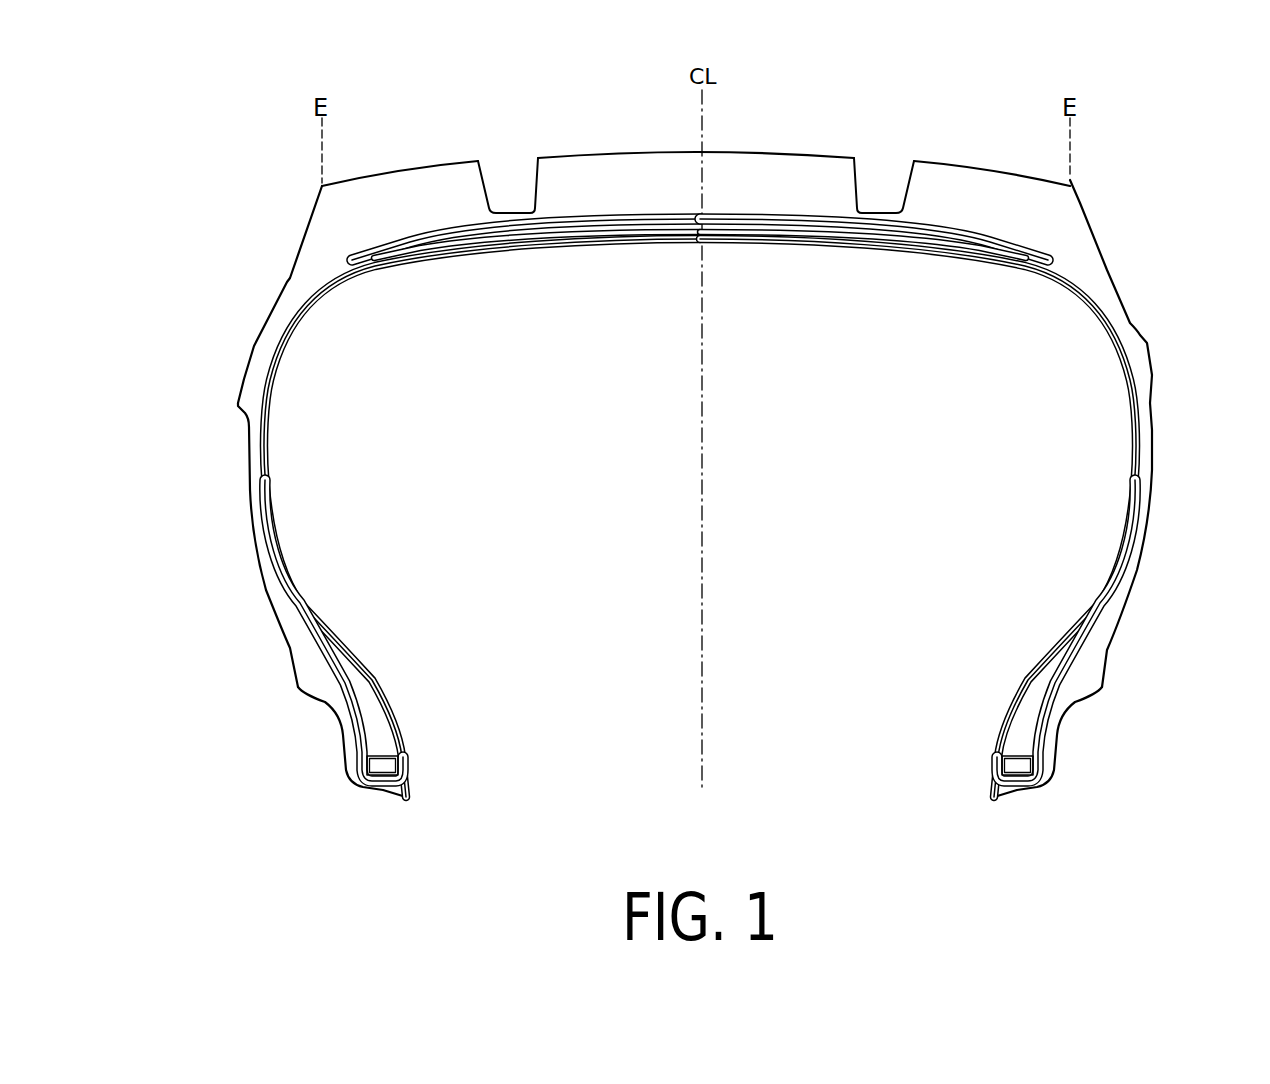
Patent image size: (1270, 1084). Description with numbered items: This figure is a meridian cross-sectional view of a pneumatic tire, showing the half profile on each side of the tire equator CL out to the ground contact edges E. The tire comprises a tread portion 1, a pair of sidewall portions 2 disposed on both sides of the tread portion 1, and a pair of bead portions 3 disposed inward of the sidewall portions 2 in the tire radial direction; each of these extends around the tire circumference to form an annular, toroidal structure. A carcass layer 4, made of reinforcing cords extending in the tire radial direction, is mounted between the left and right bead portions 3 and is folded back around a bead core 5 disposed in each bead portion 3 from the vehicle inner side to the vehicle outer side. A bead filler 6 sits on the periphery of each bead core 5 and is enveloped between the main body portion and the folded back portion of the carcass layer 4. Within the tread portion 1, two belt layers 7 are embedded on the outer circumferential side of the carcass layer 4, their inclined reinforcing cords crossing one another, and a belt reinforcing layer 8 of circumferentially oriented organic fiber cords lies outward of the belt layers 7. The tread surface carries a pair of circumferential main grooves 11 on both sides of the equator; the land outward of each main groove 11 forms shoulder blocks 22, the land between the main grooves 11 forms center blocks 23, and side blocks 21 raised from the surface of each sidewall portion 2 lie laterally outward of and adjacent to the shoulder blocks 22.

The tread portion 1 is at (732, 136).
The sidewall portion 2 is at (237, 527).
The bead portion 3 is at (326, 768).
The carcass layer 4 is at (1050, 284).
The bead core 5 is at (385, 767).
The bead filler 6 is at (375, 708).
The belt layer 7 is at (778, 238).
The belt reinforcing layer 8 is at (873, 241).
The main groove 11 is at (510, 176).
The side block 21 is at (250, 345).
The shoulder block 22 is at (390, 170).
The center block 23 is at (630, 150).